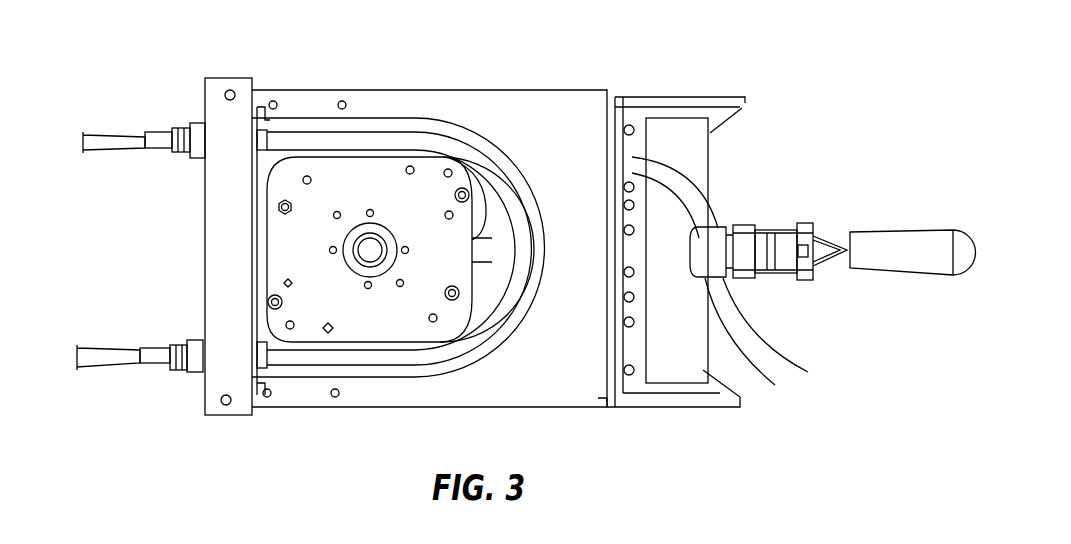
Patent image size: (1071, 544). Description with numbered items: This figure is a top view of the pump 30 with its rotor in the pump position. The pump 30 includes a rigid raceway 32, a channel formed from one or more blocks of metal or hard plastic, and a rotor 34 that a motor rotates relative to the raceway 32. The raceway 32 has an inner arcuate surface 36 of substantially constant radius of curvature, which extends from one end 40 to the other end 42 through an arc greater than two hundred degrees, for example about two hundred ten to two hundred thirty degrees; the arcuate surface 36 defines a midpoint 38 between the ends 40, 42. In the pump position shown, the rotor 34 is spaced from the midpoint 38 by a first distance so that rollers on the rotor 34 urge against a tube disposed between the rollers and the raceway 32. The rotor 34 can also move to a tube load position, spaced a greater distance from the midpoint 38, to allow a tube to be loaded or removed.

The pump 30 is at (680, 55).
The raceway 32 is at (545, 125).
The rotor 34 is at (427, 190).
The inner arcuate surface 36 is at (507, 330).
The midpoint 38 is at (545, 243).
The end 40 is at (378, 120).
The end 42 is at (375, 377).